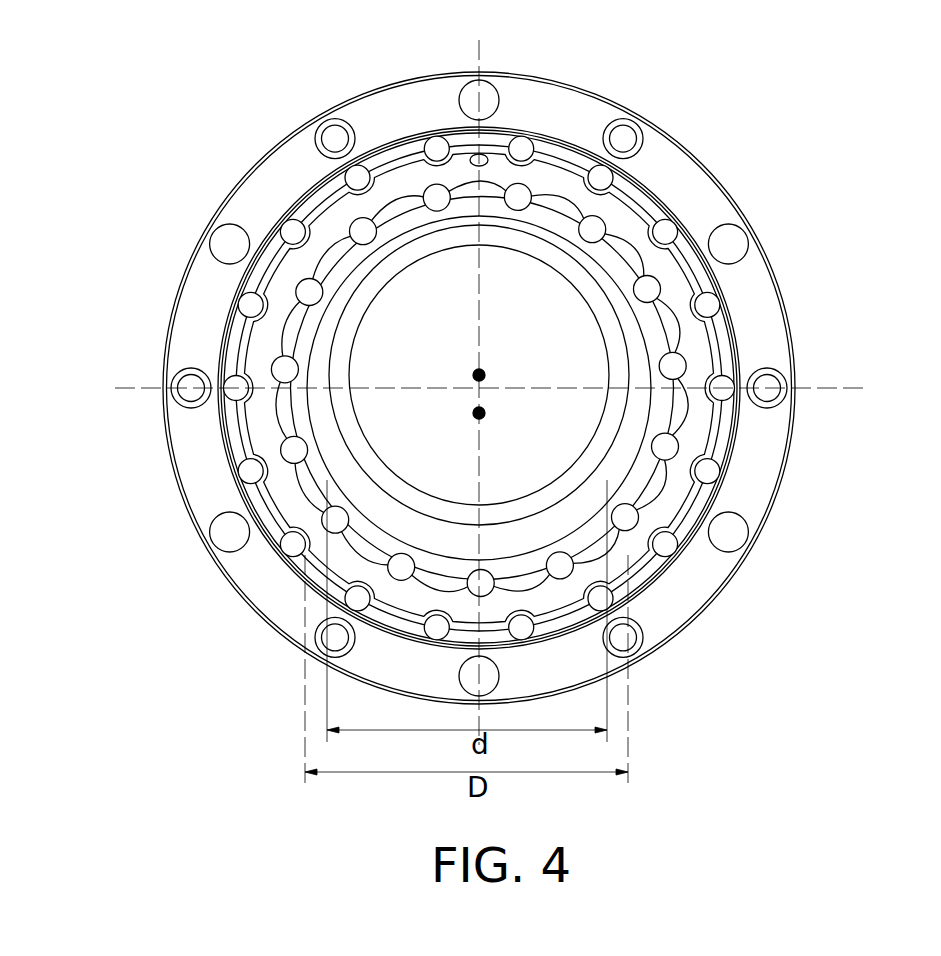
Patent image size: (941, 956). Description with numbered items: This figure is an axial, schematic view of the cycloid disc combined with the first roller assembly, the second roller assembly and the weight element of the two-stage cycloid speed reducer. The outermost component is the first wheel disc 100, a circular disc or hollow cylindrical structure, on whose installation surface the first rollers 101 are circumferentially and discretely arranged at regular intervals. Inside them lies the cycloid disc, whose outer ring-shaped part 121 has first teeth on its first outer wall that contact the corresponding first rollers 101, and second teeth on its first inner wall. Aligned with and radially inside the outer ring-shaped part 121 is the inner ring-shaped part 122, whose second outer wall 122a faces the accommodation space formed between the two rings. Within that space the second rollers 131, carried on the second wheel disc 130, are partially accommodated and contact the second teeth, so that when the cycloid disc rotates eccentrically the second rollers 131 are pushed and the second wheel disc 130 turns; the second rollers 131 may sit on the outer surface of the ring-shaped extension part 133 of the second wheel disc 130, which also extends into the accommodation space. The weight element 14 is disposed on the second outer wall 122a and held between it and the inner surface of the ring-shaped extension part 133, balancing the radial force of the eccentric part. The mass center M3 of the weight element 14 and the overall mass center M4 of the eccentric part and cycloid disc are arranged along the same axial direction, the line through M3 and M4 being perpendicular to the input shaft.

The first wheel disc 100 is at (710, 205).
The weight element 14 is at (243, 268).
The outer ring-shaped part 121 is at (295, 512).
The second wheel disc 130 is at (490, 205).
The first rollers 101 is at (703, 473).
The second rollers 131 is at (647, 288).
The ring-shaped extension part 133 is at (323, 355).
The second outer wall 122a is at (360, 283).
The inner ring-shaped part 122 is at (340, 375).
The overall mass center of the eccentric part and the cycloid disc M4 is at (485, 372).
The mass center of the weight element M3 is at (485, 412).